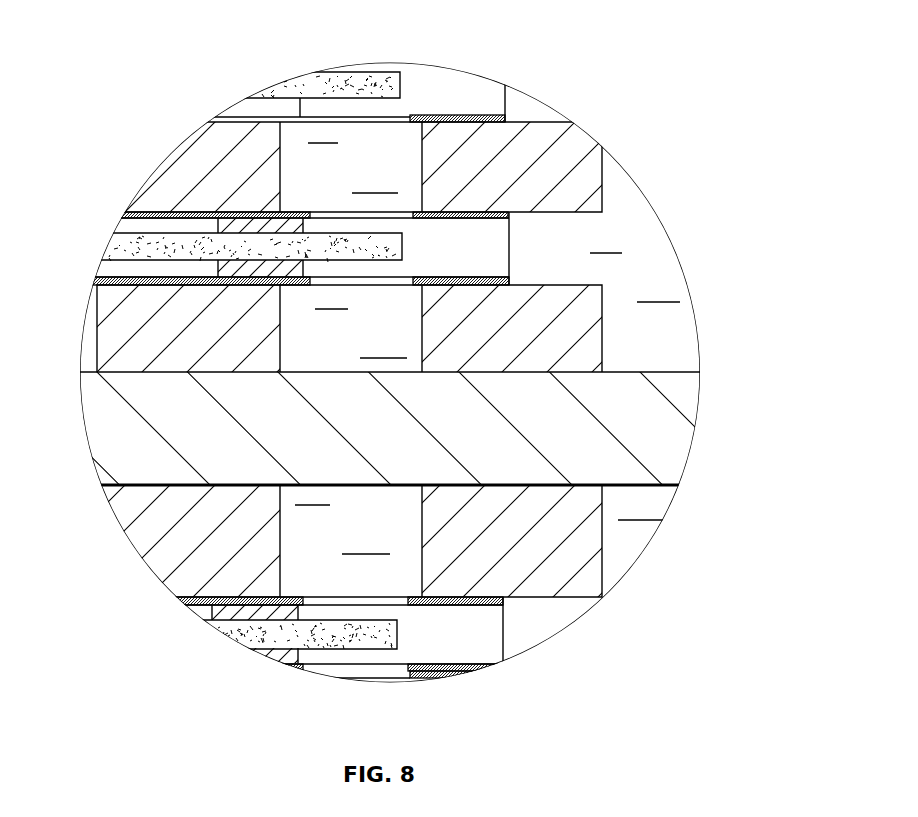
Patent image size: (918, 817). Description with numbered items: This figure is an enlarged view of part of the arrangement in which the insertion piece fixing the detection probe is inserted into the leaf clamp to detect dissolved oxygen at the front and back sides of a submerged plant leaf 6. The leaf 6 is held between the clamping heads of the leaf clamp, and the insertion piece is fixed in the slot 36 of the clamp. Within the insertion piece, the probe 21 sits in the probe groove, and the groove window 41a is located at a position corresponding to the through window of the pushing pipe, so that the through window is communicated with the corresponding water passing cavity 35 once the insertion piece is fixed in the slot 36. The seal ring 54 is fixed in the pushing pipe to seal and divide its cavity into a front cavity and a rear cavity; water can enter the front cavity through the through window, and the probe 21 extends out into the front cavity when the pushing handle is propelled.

The submerged plant leaf 6 is at (495, 440).
The probe 21 is at (378, 244).
The water passing cavity 35 is at (350, 332).
The slot 36 is at (552, 260).
The groove window 41a is at (470, 117).
The seal ring 54 is at (250, 225).